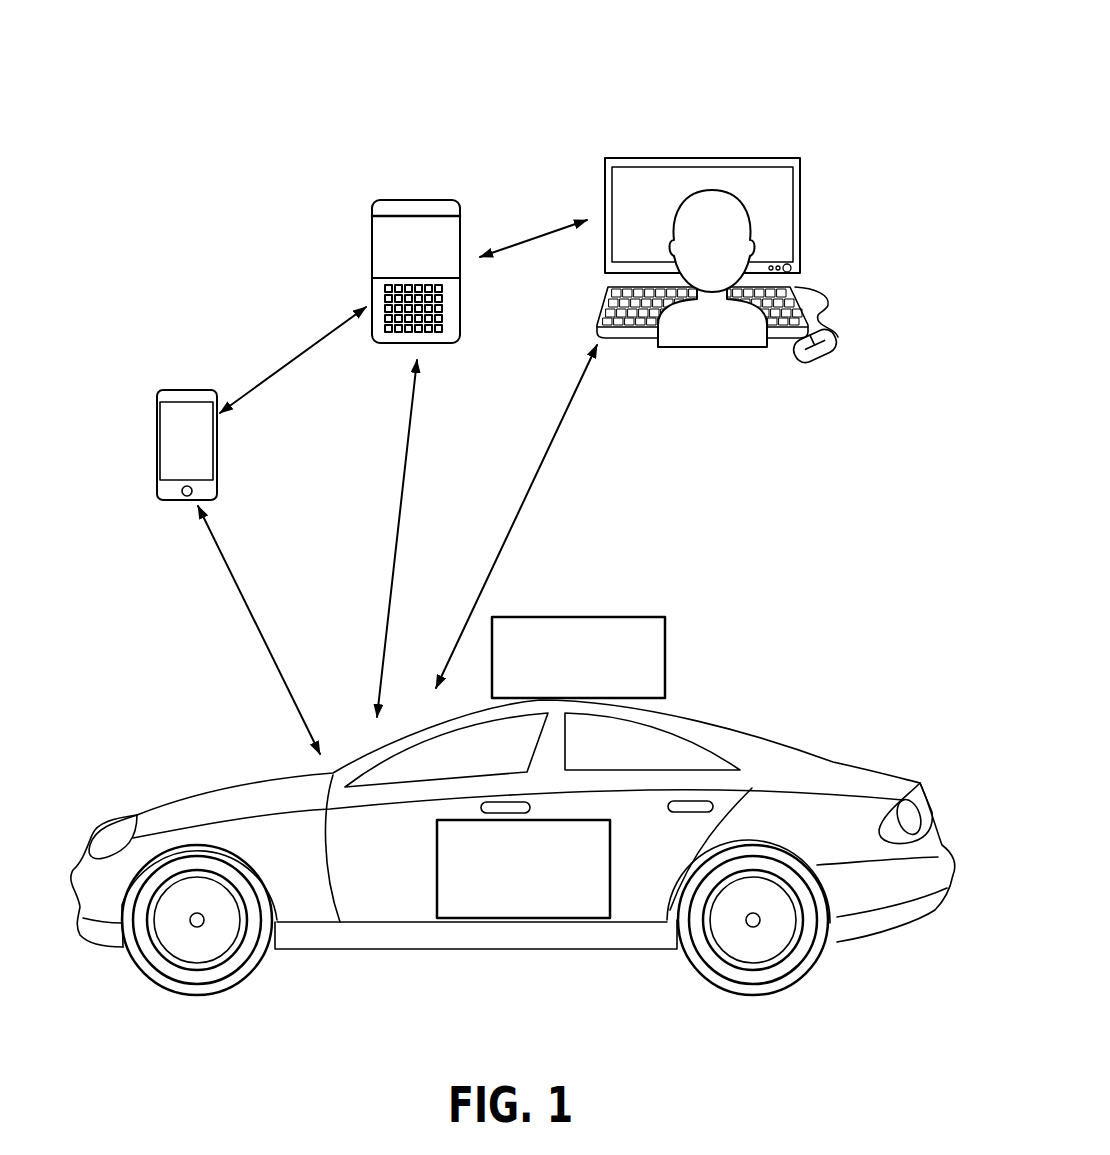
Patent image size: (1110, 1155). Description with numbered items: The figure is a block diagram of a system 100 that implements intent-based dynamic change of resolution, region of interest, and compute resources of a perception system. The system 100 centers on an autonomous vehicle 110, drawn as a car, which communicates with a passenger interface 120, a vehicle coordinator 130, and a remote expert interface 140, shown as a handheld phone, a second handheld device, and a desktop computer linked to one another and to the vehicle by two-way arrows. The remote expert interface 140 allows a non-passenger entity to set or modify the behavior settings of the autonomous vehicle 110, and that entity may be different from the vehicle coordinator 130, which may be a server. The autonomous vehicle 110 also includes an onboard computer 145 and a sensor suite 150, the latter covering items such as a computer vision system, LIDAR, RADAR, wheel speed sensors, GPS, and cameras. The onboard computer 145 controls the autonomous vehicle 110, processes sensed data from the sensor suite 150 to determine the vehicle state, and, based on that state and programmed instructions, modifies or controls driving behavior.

The system 100 is at (820, 85).
The autonomous vehicle 110 is at (898, 897).
The passenger interface 120 is at (180, 388).
The vehicle coordinator 130 is at (410, 198).
The remote expert interface 140 is at (707, 158).
The onboard computer 145 is at (540, 905).
The sensor suite 150 is at (562, 686).